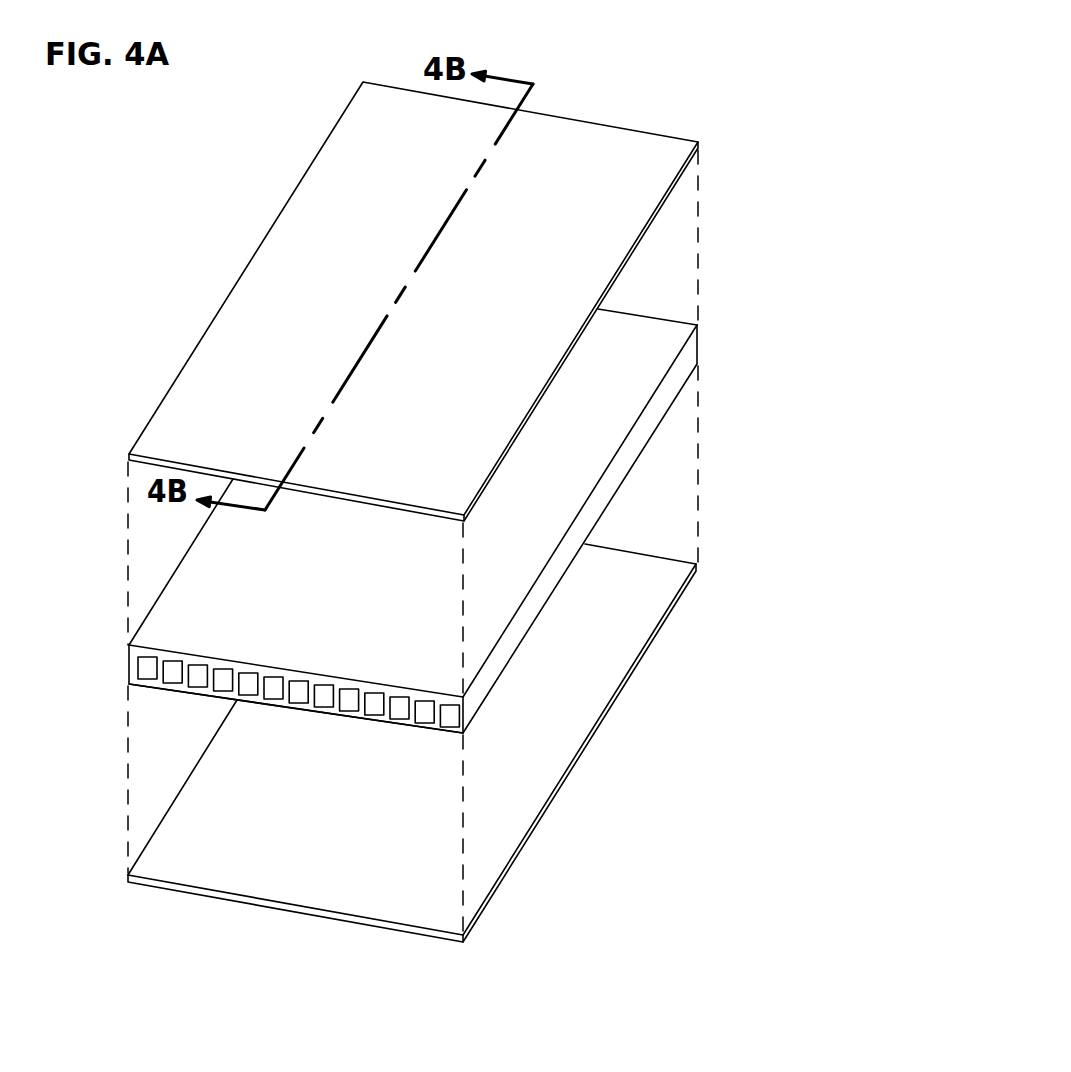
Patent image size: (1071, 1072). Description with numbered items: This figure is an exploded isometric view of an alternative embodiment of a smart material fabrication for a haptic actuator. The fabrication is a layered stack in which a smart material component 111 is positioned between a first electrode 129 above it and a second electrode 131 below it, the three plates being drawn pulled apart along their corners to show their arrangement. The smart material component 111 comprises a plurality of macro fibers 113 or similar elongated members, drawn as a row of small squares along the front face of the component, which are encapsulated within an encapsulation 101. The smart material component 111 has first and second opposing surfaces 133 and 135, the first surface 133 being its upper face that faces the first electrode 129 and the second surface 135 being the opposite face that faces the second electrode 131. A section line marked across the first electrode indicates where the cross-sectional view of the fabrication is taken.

The encapsulation 101 is at (198, 692).
The smart material component 111 is at (567, 570).
The macro fibers 113 is at (148, 657).
The first electrode 129 is at (615, 122).
The second electrode 131 is at (492, 892).
The first opposing surface 133 is at (540, 484).
The second opposing surface 135 is at (535, 618).